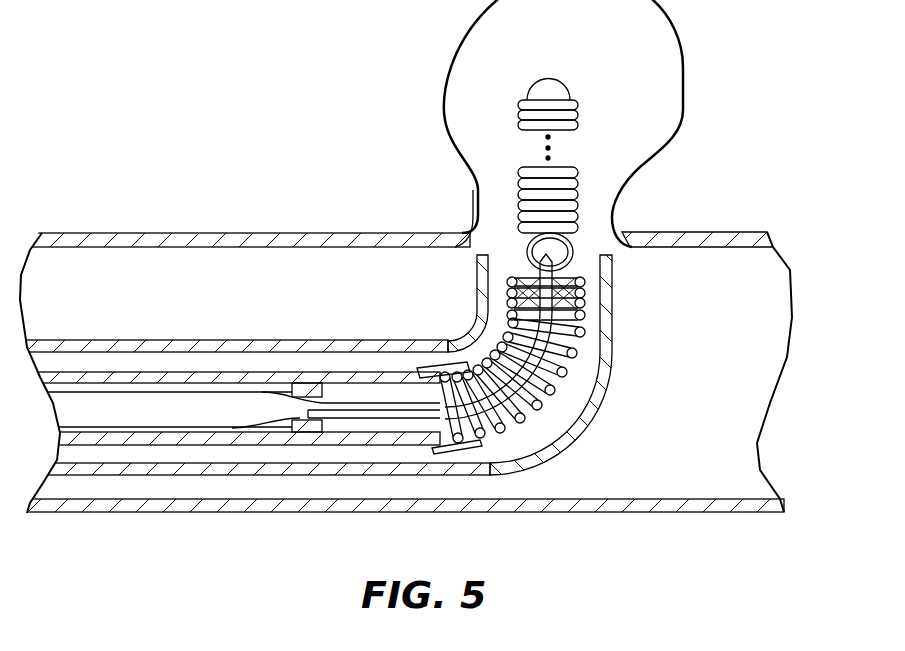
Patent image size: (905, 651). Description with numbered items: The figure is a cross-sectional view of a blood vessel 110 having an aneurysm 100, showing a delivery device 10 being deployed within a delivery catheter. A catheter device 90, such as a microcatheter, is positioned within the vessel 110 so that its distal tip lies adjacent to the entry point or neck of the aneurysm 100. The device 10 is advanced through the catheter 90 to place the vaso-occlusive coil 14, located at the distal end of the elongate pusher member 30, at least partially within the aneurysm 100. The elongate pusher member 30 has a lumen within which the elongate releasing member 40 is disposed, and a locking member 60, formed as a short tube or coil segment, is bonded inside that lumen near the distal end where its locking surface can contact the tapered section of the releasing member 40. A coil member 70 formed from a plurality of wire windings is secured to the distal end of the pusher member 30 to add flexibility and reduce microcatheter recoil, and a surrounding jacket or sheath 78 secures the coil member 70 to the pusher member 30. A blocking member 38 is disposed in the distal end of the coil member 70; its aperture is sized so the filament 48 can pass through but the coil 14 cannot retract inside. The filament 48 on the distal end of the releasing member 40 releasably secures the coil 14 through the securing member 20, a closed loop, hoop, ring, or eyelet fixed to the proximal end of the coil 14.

The delivery device 10 is at (261, 455).
The vaso-occlusive coil 14 is at (579, 178).
The securing member 20 is at (523, 243).
The elongate pusher member 30 is at (140, 372).
The blocking member 38 is at (572, 268).
The elongate releasing member 40 is at (117, 403).
The filament 48 is at (389, 419).
The locking member 60 is at (343, 372).
The coil member 70 is at (613, 312).
The surrounding jacket or sheath 78 is at (452, 365).
The catheter device 90 is at (247, 346).
The aneurysm 100 is at (678, 17).
The blood vessel 110 is at (702, 232).